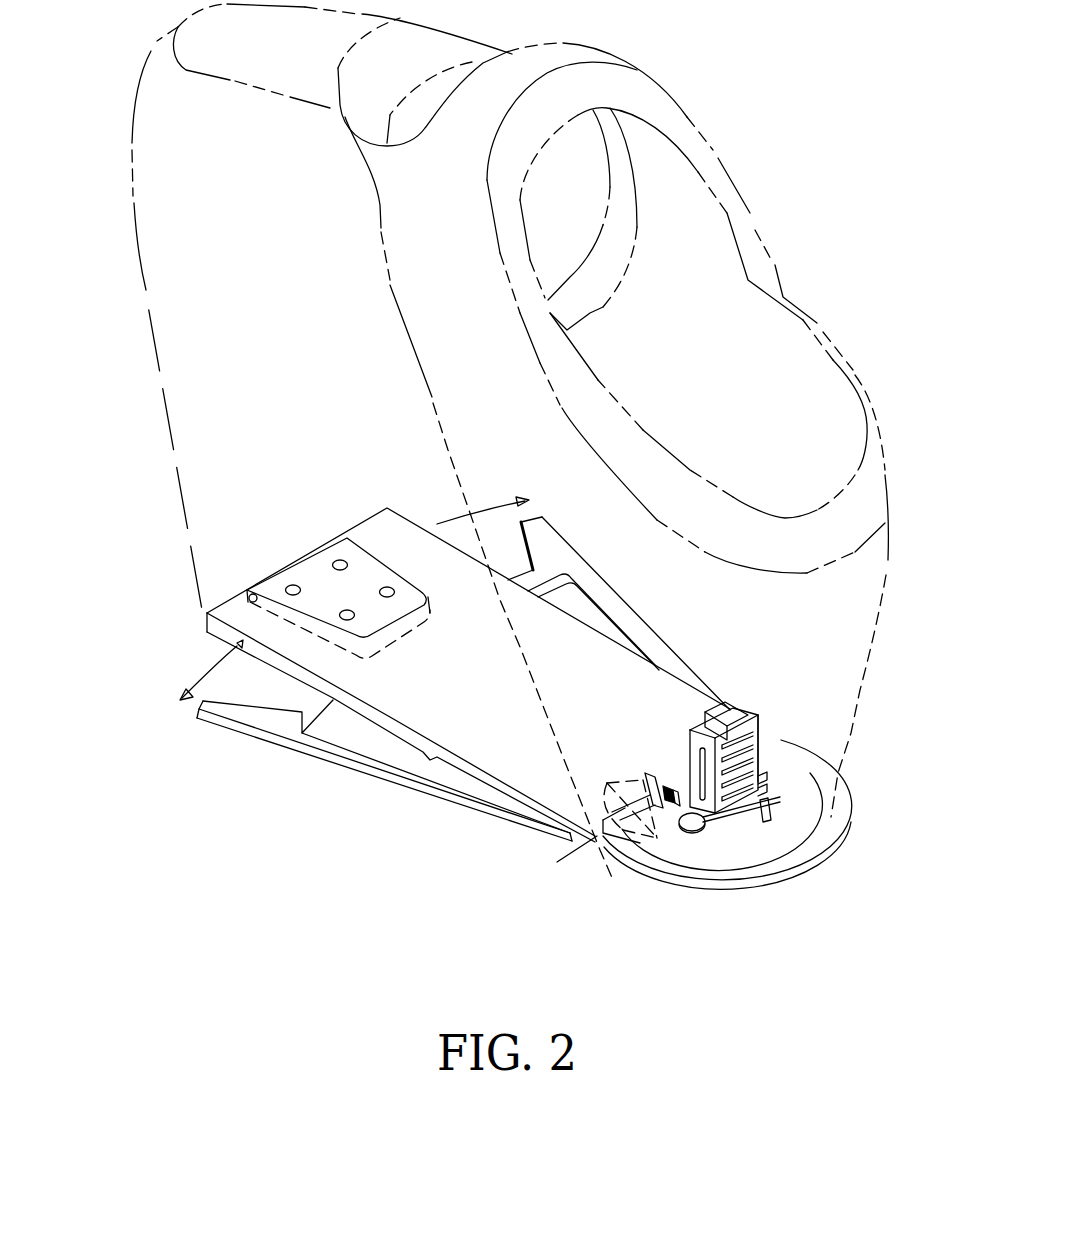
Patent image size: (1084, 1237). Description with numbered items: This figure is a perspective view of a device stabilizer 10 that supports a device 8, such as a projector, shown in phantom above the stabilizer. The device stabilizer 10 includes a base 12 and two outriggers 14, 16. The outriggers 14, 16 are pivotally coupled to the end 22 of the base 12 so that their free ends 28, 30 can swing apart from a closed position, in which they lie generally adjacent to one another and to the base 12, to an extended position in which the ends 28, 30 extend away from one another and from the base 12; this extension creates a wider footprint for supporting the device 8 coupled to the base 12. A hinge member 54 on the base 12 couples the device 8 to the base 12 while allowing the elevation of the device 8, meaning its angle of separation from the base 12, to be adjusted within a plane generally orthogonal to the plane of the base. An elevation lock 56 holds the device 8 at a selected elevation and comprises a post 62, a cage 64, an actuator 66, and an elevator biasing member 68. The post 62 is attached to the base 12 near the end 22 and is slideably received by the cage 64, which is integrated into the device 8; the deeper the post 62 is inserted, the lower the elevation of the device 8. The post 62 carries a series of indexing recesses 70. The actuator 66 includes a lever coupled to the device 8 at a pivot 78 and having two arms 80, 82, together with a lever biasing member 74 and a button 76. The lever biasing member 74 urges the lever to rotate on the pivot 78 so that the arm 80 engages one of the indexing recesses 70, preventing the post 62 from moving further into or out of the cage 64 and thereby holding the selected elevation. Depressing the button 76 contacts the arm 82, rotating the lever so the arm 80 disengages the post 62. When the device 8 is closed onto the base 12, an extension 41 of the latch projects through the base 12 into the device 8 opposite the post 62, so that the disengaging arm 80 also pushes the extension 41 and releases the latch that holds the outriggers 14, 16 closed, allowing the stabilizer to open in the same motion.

The device 8 is at (689, 69).
The device stabilizer 10 is at (437, 675).
The base 12 is at (377, 533).
The outrigger 14 is at (623, 613).
The outrigger 16 is at (335, 758).
The end of base 22 is at (733, 831).
The end of outrigger 28 is at (535, 522).
The end of outrigger 30 is at (200, 708).
The extension 41 is at (810, 832).
The hinge member 54 is at (303, 568).
The elevation lock 56 is at (743, 750).
The post 62 is at (760, 720).
The cage 64 is at (733, 707).
The actuator 66 is at (642, 812).
The elevator biasing member 68 is at (707, 730).
The indexing recesses 70 is at (760, 766).
The lever biasing member 74 is at (667, 792).
The button 76 is at (625, 850).
The pivot 78 is at (705, 820).
The arm 80 is at (777, 798).
The arm 82 is at (650, 790).